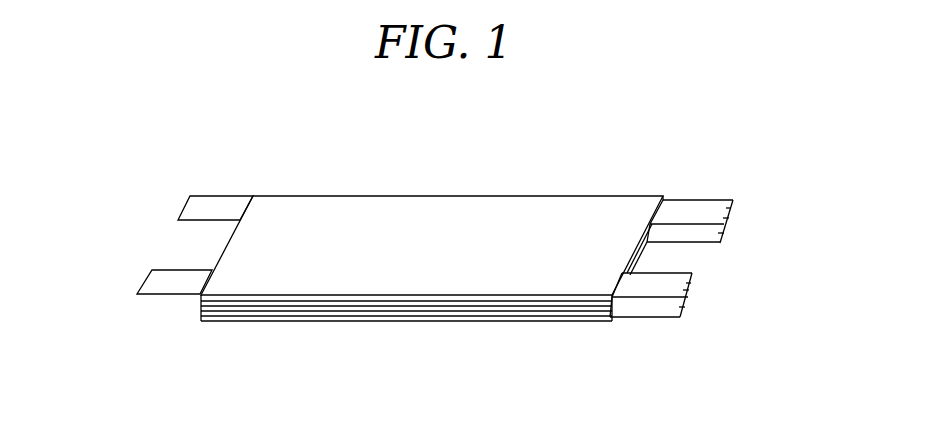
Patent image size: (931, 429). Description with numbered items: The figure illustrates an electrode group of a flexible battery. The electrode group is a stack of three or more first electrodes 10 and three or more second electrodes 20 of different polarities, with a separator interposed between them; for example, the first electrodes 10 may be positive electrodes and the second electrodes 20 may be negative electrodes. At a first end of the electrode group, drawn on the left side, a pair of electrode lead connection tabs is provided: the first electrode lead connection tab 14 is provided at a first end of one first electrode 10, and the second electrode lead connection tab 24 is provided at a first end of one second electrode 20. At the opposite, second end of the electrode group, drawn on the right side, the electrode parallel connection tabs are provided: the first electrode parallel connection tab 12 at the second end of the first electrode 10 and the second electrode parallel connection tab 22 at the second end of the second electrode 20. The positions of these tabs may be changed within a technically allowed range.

The first electrode 10 is at (387, 227).
The second electrode 20 is at (422, 302).
The first electrode parallel connection tab 12 is at (727, 232).
The second electrode parallel connection tab 22 is at (688, 307).
The second electrode lead connection tab 24 is at (182, 203).
The first electrode lead connection tab 14 is at (143, 280).